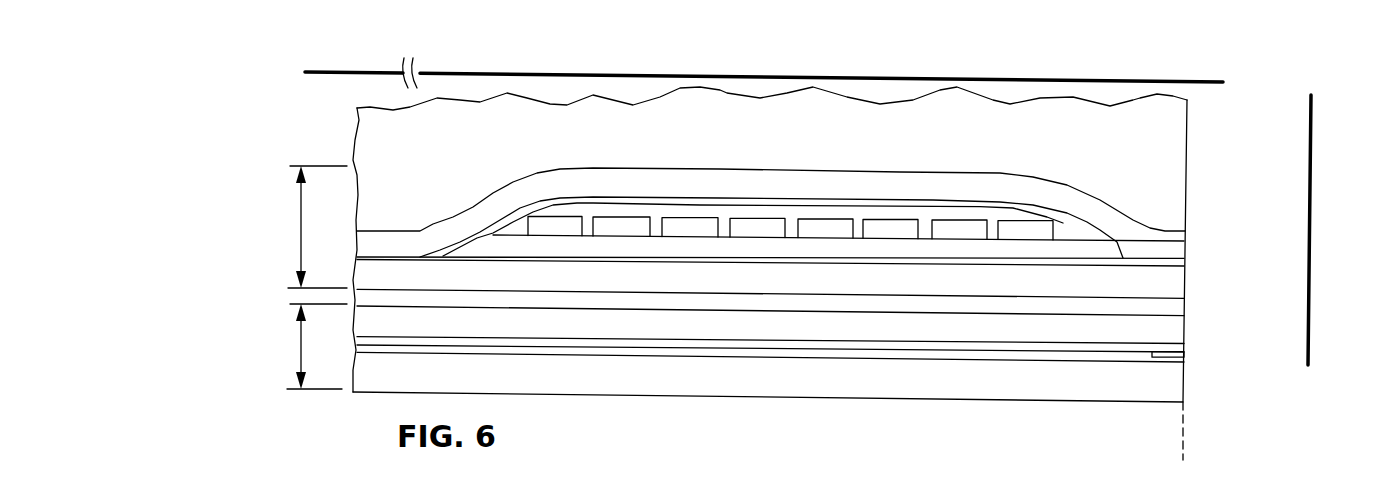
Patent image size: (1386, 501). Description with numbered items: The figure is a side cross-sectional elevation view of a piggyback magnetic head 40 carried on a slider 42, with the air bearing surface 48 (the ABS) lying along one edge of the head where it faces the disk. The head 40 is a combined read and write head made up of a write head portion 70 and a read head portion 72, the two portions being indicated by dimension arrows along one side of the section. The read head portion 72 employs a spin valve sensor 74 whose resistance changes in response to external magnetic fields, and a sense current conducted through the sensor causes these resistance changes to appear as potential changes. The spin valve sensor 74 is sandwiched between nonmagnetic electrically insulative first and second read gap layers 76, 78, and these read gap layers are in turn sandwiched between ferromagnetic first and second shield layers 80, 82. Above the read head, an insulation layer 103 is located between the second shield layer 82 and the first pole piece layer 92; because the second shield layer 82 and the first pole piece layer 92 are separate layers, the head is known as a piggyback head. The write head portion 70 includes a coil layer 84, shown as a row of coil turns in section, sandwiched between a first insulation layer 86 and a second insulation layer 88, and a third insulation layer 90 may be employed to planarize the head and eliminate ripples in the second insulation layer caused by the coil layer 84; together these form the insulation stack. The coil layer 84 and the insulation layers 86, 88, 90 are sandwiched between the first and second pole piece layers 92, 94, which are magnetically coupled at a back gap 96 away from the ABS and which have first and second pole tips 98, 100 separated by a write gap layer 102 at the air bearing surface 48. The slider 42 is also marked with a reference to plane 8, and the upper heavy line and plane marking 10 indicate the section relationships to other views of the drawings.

The slider 8 is at (1324, 103).
The magnetic disk 10 is at (312, 60).
The magnetic head 40 is at (332, 113).
The slider 42 is at (1170, 128).
The air bearing surface 48 is at (1183, 457).
The write head portion 70 is at (301, 232).
The read head portion 72 is at (301, 352).
The spin valve sensor 74 is at (1185, 355).
The first read gap layer 76 is at (838, 357).
The second read gap layer 78 is at (807, 346).
The first shield layer 80 is at (945, 383).
The second shield layer 82 is at (1050, 332).
The coil layer 84 is at (753, 222).
The first insulation layer 86 is at (727, 247).
The second insulation layer 88 is at (1068, 235).
The third insulation layer 90 is at (597, 200).
The first pole piece layer 92 is at (1100, 287).
The second pole piece layer 94 is at (963, 185).
The back gap 96 is at (397, 257).
The first pole tip 98 is at (1185, 286).
The second pole tip 100 is at (1178, 242).
The write gap layer 102 is at (1185, 262).
The insulation layer 103 is at (1005, 305).